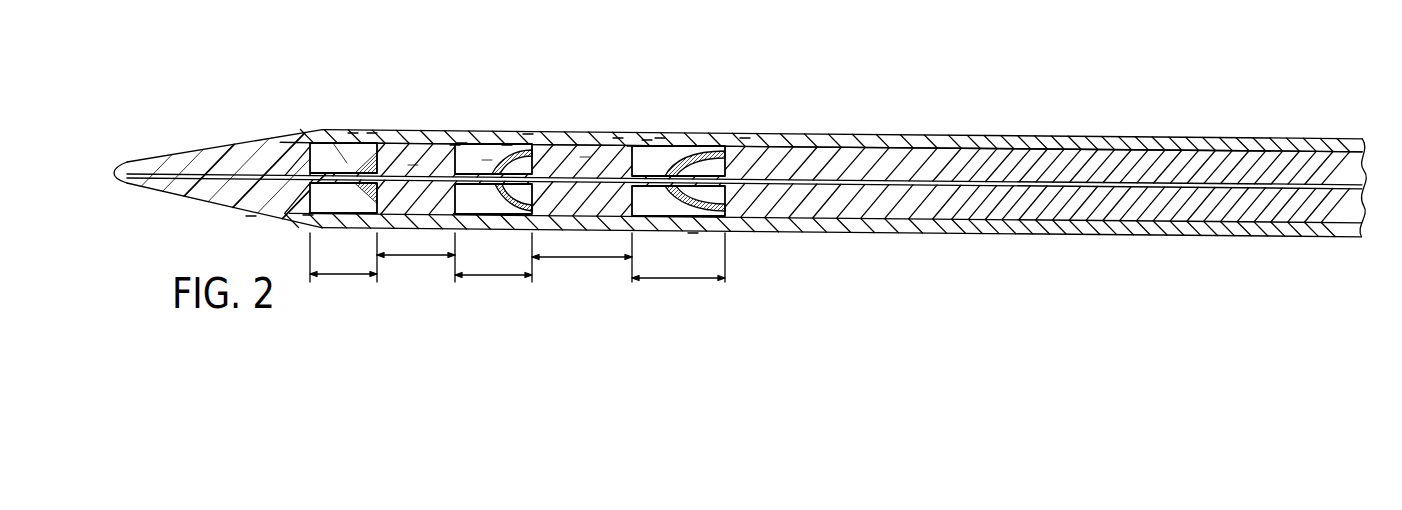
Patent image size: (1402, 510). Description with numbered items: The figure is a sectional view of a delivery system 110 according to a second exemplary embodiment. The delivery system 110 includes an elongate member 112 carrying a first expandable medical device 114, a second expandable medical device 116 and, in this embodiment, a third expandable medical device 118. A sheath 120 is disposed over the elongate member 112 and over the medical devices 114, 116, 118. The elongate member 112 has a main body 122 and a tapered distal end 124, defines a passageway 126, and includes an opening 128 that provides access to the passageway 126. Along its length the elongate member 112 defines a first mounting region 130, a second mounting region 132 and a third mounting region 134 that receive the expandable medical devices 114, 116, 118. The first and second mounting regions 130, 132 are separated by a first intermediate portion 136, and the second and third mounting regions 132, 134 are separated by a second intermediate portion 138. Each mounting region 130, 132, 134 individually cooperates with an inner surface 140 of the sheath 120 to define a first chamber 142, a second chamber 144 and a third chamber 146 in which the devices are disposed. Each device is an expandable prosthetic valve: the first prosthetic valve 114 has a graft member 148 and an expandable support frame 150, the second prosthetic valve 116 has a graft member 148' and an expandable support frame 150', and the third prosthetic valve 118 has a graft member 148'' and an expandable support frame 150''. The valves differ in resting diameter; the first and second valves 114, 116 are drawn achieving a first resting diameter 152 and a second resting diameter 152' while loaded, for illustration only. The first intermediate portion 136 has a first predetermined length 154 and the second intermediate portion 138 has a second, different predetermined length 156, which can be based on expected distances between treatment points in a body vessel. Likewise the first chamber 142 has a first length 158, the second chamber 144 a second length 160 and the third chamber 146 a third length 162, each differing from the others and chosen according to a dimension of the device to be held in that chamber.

The delivery system 110 is at (303, 75).
The elongate member 112 is at (893, 134).
The first expandable medical device 114 is at (367, 233).
The second expandable medical device 116 is at (521, 234).
The third expandable medical device 118 is at (731, 235).
The sheath 120 is at (1200, 135).
The main body 122 is at (614, 134).
The tapered distal end 124 is at (215, 213).
The passageway 126 is at (618, 138).
The opening 128 is at (116, 166).
The first mounting region 130 is at (251, 216).
The second mounting region 132 is at (462, 143).
The third mounting region 134 is at (647, 140).
The first intermediate portion 136 is at (455, 145).
The second intermediate portion 138 is at (632, 145).
The inner surface 140 is at (343, 158).
The first chamber 142 is at (353, 133).
The second chamber 144 is at (507, 145).
The third chamber 146 is at (660, 138).
The graft member 148 is at (386, 92).
The graft member 148' is at (545, 117).
The graft member 148'' is at (784, 109).
The expandable support frame 150 is at (505, 117).
The expandable support frame 150' is at (293, 234).
The expandable support frame 150'' is at (666, 247).
The first resting diameter 152 is at (405, 124).
The second resting diameter 152' is at (588, 119).
The first predetermined length 154 is at (420, 262).
The second predetermined length 156 is at (578, 266).
The first length 158 is at (343, 286).
The second length 160 is at (490, 286).
The third length 162 is at (680, 286).